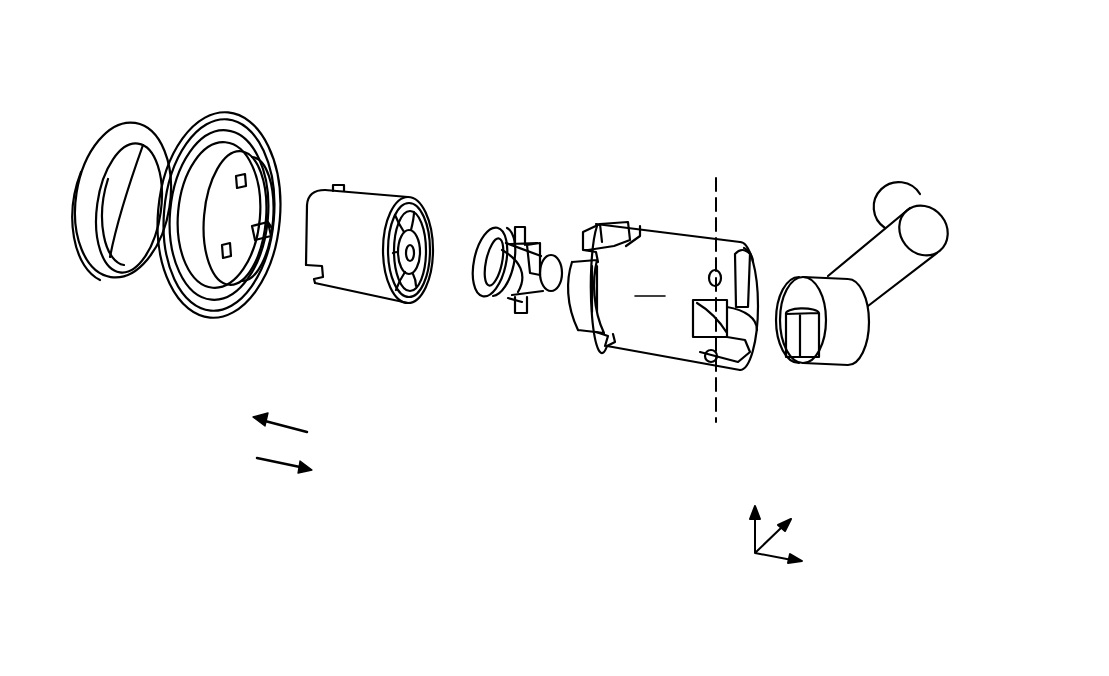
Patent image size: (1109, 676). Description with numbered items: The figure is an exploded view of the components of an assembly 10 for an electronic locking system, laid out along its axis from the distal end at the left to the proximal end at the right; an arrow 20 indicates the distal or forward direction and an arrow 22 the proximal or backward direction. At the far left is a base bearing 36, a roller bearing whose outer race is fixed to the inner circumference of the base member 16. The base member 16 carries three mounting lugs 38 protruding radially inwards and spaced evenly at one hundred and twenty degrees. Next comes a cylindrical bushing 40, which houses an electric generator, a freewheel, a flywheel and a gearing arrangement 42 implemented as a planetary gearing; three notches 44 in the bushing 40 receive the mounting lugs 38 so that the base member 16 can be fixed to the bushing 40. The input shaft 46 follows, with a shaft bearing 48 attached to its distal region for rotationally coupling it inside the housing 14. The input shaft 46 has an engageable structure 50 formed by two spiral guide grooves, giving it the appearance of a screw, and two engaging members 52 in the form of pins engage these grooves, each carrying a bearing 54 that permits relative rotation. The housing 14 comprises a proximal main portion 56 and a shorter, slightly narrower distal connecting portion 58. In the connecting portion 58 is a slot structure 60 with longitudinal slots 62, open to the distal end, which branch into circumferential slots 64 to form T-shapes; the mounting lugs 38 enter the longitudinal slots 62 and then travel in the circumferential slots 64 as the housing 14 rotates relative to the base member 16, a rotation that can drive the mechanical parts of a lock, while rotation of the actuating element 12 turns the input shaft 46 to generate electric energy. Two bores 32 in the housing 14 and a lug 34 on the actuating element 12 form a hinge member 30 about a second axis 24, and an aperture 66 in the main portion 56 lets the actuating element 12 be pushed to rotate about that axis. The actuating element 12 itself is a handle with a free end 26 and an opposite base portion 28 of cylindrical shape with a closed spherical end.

The assembly 10 is at (730, 92).
The actuating element 12 is at (869, 277).
The housing 14 is at (699, 292).
The base member 16 is at (236, 194).
The arrow 20 is at (299, 433).
The arrow 22 is at (301, 471).
The second axis 24 is at (718, 422).
The free end 26 is at (930, 210).
The base portion 28 is at (849, 350).
The hinge member 30 is at (755, 377).
The bores 32 is at (710, 278).
The lug 34 is at (808, 352).
The base bearing 36 is at (108, 142).
The mounting lugs 38 is at (270, 232).
The bushing 40 is at (345, 252).
The gearing arrangement 42 is at (414, 296).
The notches 44 is at (340, 188).
The input shaft 46 is at (560, 260).
The shaft bearing 48 is at (484, 240).
The engageable structure 50 is at (541, 298).
The engaging members 52 is at (519, 233).
The bearing 54 is at (534, 250).
The main portion 56 is at (728, 246).
The connecting portion 58 is at (594, 334).
The slot structure 60 is at (699, 275).
The longitudinal slots 62 is at (625, 238).
The circumferential slots 64 is at (638, 238).
The aperture 66 is at (748, 292).